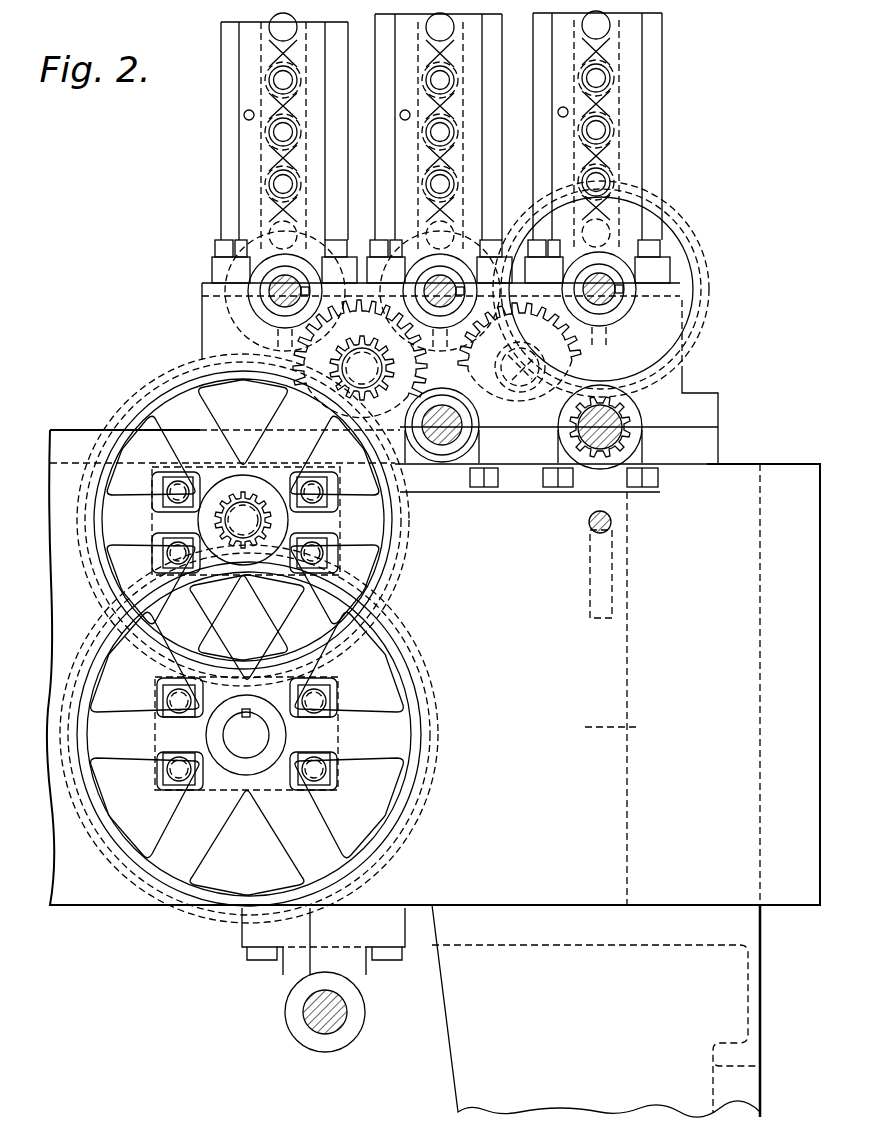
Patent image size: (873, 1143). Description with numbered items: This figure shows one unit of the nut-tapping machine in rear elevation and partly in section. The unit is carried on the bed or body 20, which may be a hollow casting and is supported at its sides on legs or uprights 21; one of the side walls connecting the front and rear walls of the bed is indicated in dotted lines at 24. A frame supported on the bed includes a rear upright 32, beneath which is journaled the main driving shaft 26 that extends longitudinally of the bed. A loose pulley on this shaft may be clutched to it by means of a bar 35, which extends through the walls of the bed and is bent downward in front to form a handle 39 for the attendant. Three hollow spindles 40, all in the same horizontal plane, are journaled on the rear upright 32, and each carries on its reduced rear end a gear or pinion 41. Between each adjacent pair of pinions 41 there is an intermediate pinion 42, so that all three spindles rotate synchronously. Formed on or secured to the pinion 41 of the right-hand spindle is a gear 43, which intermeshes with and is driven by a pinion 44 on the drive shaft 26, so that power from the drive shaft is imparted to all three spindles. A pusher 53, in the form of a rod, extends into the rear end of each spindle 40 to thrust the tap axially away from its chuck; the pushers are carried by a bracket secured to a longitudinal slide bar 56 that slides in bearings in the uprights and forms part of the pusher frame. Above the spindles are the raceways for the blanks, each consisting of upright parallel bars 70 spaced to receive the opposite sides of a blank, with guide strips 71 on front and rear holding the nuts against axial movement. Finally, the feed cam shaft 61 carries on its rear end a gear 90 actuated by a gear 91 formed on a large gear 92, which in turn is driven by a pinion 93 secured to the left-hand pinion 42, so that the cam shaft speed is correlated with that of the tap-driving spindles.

The bed or body 20 is at (433, 739).
The legs or uprights 21 is at (596, 1011).
The side wall 24 is at (597, 726).
The main driving shaft 26 is at (627, 437).
The rear upright 32 is at (670, 393).
The bar 35 is at (587, 525).
The handle 39 is at (587, 595).
The spindle 40 is at (280, 277).
The gear or pinion 41 is at (240, 331).
The pinion 42 is at (333, 343).
The gear 43 is at (707, 325).
The pinion 44 is at (618, 470).
The pusher 53 is at (265, 297).
The longitudinal bar 56 is at (440, 462).
The feed cam shaft 61 is at (245, 752).
The upright parallel bars 70 is at (240, 108).
The guide strips 71 is at (242, 155).
The gear 90 is at (398, 667).
The gear 91 is at (300, 521).
The large gear 92 is at (395, 560).
The pinion 93 is at (362, 418).